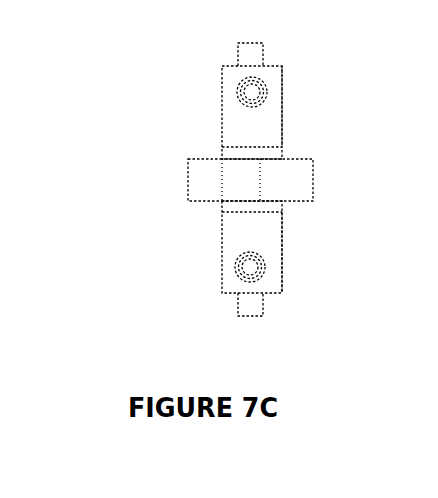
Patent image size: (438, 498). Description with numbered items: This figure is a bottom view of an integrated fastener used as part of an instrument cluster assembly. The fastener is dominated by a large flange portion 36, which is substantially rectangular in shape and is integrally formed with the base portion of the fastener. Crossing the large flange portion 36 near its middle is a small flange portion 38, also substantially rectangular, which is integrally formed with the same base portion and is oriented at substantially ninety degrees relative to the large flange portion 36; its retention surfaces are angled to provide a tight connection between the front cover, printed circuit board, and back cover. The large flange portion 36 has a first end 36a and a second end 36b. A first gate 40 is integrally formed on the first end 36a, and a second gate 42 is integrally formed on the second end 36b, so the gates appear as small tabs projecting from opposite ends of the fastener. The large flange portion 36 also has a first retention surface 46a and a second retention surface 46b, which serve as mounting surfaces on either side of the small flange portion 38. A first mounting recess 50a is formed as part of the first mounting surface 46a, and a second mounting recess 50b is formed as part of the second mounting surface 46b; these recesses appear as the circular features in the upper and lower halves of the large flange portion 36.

The large flange portion 36 is at (173, 190).
The first end of the large flange portion 36a is at (221, 75).
The second end of the large flange portion 36b is at (221, 283).
The small flange portion 38 is at (293, 178).
The first gate 40 is at (253, 54).
The second gate 42 is at (252, 312).
The first retention surface 46a is at (262, 125).
The second retention surface 46b is at (268, 236).
The first mounting recess 50a is at (252, 92).
The second mounting recess 50b is at (250, 267).